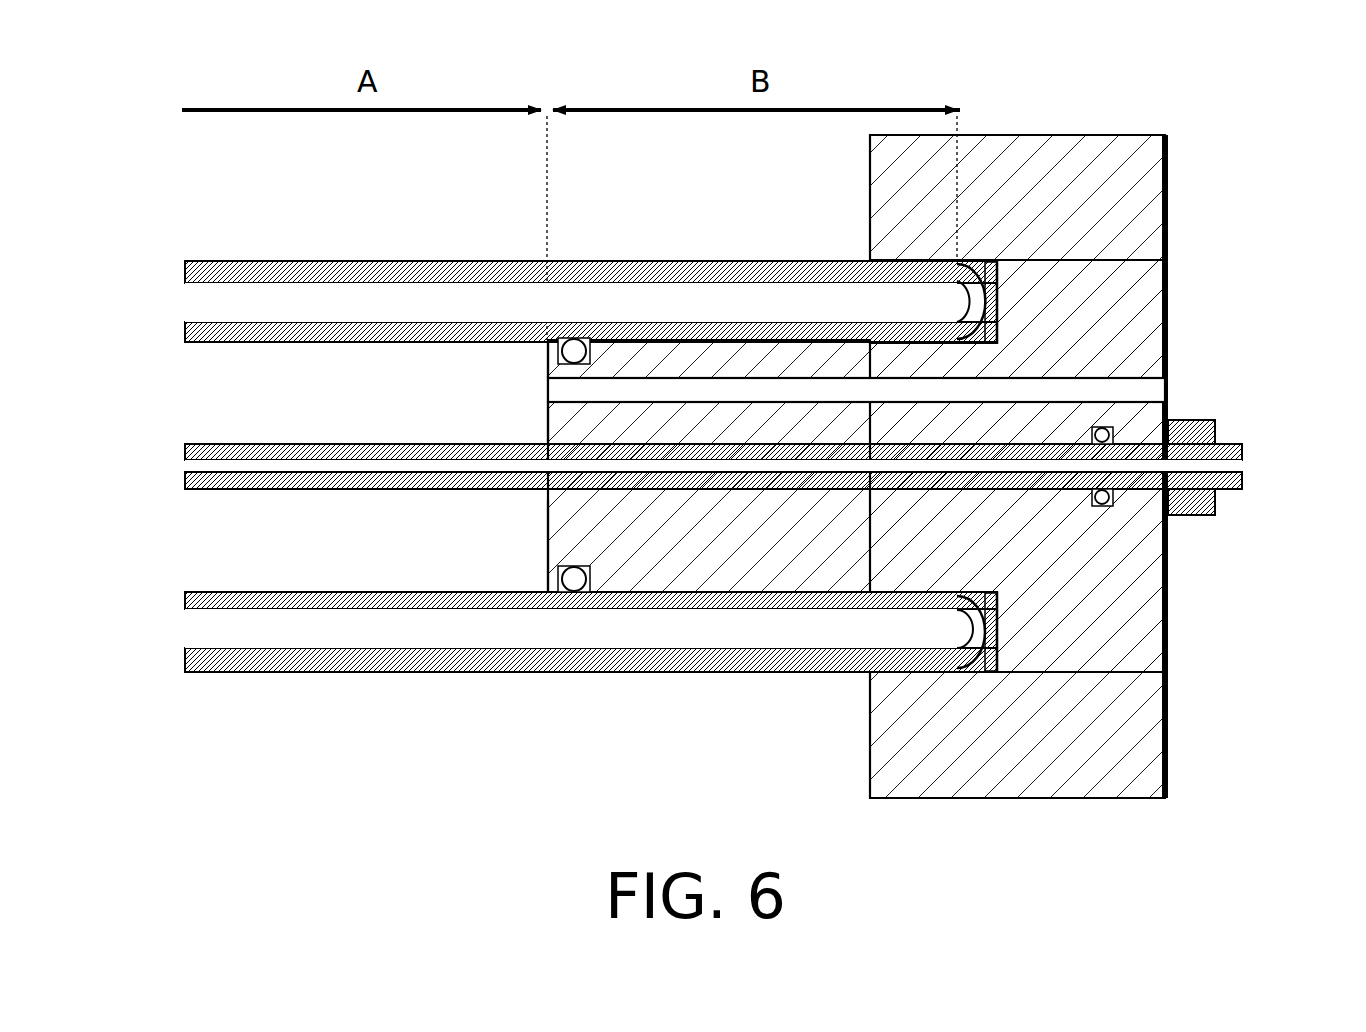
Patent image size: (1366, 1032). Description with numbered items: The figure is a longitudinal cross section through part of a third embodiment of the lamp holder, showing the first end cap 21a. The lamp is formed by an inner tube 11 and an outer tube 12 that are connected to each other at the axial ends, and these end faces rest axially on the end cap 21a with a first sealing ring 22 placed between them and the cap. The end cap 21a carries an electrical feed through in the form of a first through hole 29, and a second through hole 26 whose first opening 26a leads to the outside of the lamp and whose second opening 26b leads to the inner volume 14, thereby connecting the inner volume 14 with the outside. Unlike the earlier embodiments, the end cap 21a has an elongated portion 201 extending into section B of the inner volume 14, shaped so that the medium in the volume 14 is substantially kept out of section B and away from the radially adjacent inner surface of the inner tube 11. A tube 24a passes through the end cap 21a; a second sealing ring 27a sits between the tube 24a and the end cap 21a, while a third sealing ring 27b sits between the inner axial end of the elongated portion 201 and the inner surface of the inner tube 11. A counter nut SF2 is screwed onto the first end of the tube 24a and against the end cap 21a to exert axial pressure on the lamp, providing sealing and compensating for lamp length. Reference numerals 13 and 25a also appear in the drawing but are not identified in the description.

The inner tube 11 is at (298, 626).
The outer tube 12 is at (237, 690).
The ferrule tube 13 is at (360, 626).
The inner volume 14 is at (170, 543).
The first end cap 21a is at (1149, 203).
The first sealing ring 22 is at (991, 670).
The tube 24a is at (316, 503).
The center tube 25a is at (1261, 458).
The second through hole 26 is at (1046, 379).
The first opening 26a is at (1195, 390).
The second opening 26b is at (528, 385).
The second sealing ring 27a is at (1110, 515).
The third sealing ring 27b is at (575, 581).
The first through hole 29 is at (520, 430).
The elongated portion 201 is at (748, 558).
The counter nut SF2 is at (1200, 526).